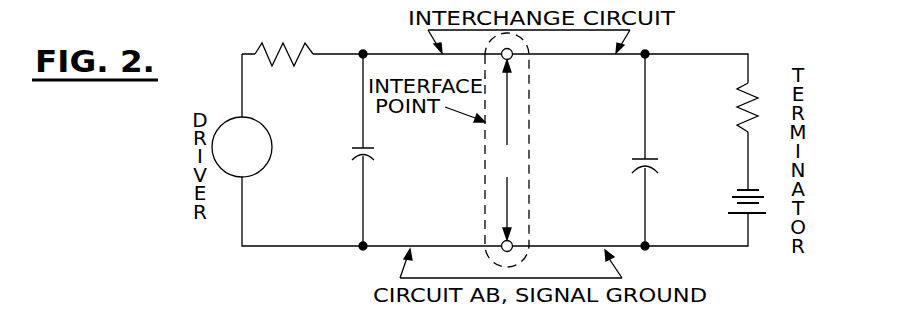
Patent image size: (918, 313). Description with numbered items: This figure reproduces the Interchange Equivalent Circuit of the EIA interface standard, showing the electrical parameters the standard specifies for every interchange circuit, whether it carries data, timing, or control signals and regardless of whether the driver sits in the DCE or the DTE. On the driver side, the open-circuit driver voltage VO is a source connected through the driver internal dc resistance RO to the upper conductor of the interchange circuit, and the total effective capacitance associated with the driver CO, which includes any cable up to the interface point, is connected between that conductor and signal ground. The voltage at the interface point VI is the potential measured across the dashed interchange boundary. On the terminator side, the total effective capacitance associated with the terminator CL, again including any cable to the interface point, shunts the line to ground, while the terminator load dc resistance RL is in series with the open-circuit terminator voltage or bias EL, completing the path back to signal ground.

The driver internal dc resistance RO is at (284, 41).
The open-circuit driver voltage VO is at (255, 147).
The total effective capacitance associated with the driver CO is at (378, 160).
The voltage at the interface point VI is at (507, 150).
The total effective capacitance associated with the terminator CL is at (662, 171).
The terminator load dc resistance RL is at (759, 107).
The open-circuit terminator voltage (bias) EL is at (756, 197).